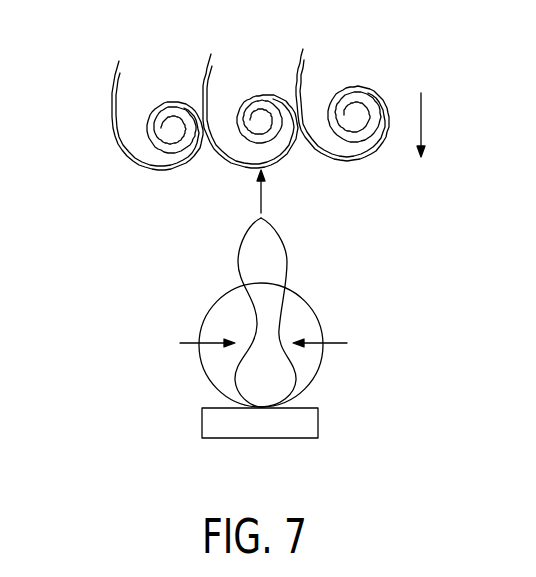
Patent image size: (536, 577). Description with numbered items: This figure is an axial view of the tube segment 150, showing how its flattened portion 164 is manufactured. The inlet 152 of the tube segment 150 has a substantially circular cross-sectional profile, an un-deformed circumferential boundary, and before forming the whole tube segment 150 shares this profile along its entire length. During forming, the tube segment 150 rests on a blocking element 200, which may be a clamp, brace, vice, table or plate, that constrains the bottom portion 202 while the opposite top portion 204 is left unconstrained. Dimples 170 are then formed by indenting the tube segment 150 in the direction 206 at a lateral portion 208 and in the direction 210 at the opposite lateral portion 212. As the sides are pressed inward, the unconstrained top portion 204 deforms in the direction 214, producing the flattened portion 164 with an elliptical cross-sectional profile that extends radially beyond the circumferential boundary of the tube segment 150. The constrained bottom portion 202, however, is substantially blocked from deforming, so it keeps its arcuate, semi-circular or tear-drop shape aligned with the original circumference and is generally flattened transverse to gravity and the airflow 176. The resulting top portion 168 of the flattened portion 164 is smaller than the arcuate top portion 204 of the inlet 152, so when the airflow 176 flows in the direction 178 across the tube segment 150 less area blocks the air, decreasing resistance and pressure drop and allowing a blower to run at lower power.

The tube segment 150 is at (136, 238).
The inlet 152 is at (207, 373).
The flattened portion 164 is at (264, 222).
The top portion of the flattened portion 168 is at (259, 222).
The dimples 170 is at (256, 325).
The airflow 176 is at (318, 82).
The direction of airflow 178 is at (423, 120).
The blocking element 200 is at (302, 432).
The bottom portion 202 is at (278, 402).
The top portion 204 is at (300, 282).
The direction of indentation at lateral portion 208 206 is at (203, 348).
The lateral portion 208 is at (201, 335).
The direction of indentation at lateral portion 212 210 is at (325, 342).
The lateral portion 212 is at (323, 332).
The direction of deformation of the top portion 214 is at (259, 196).